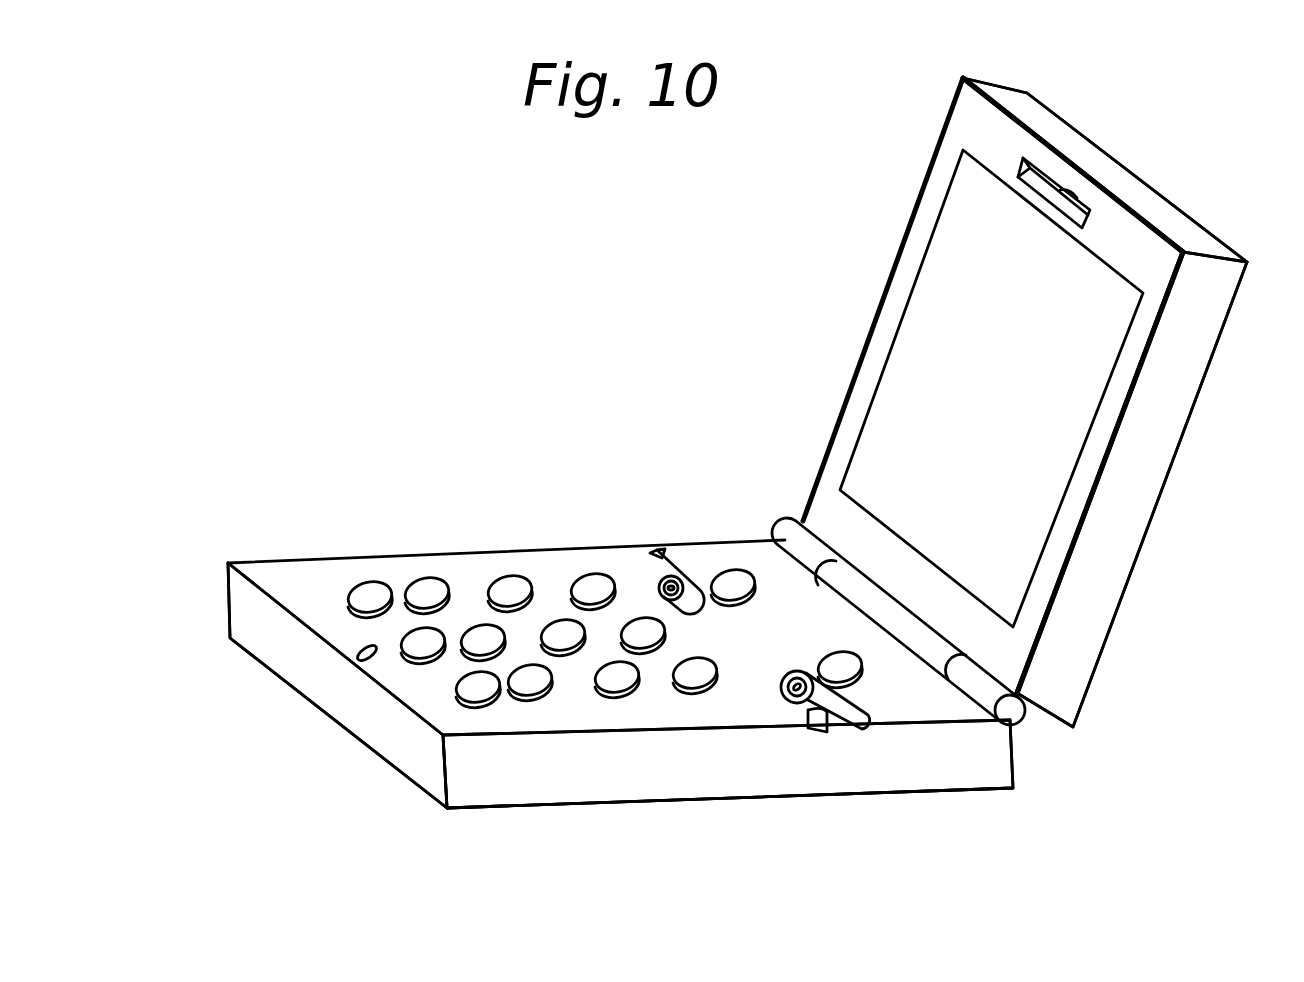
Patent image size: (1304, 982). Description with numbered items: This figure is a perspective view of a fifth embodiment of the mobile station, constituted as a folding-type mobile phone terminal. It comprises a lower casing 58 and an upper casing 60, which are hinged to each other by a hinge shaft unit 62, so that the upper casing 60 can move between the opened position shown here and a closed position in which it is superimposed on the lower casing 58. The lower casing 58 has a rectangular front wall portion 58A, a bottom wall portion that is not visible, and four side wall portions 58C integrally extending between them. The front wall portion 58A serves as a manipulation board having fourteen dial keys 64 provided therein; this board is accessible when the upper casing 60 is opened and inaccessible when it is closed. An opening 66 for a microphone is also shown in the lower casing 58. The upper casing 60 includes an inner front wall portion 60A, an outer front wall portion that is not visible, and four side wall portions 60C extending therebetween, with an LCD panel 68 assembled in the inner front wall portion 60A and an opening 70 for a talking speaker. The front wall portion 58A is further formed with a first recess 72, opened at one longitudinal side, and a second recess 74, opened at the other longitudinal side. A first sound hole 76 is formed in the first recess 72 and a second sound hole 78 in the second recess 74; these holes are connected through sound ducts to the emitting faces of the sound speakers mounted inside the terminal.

The lower casing 58 is at (356, 540).
The front wall portion 58A is at (688, 702).
The side wall portions 58C is at (338, 697).
The upper casing 60 is at (890, 271).
The inner front wall portion 60A is at (1038, 620).
The side wall portions 60C is at (1050, 130).
The hinge shaft unit 62 is at (783, 530).
The dial keys 64 is at (596, 588).
The opening for a microphone 66 is at (355, 654).
The LCD panel 68 is at (1008, 398).
The opening for a talking speaker 70 is at (1077, 197).
The first recess 72 is at (825, 735).
The second recess 74 is at (640, 552).
The first sound hole 76 is at (797, 680).
The second sound hole 78 is at (671, 576).